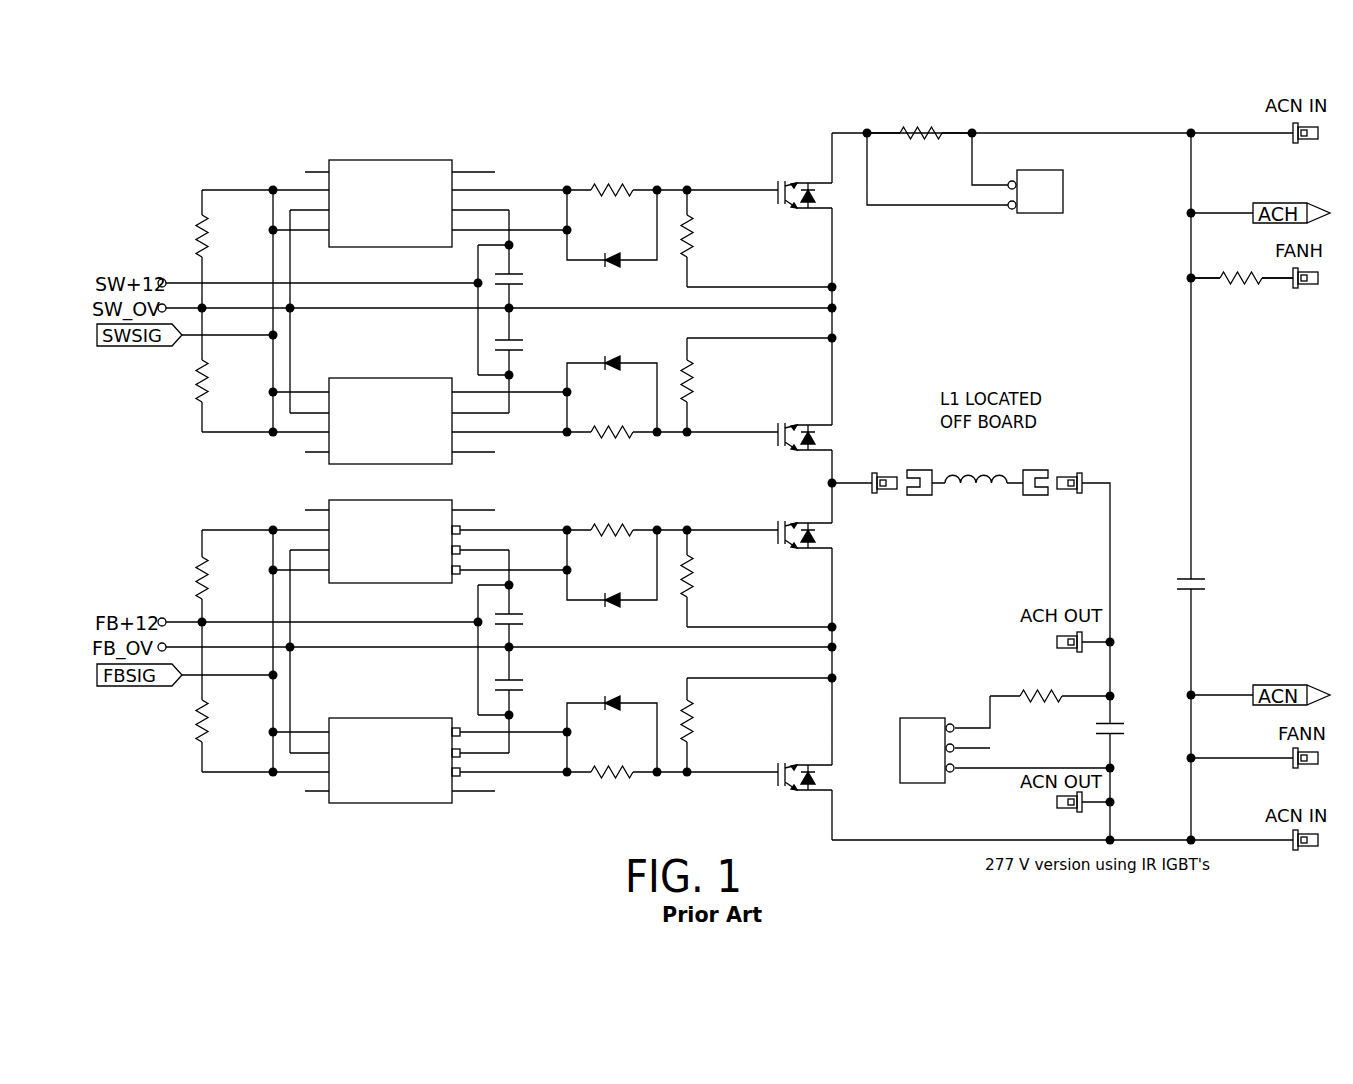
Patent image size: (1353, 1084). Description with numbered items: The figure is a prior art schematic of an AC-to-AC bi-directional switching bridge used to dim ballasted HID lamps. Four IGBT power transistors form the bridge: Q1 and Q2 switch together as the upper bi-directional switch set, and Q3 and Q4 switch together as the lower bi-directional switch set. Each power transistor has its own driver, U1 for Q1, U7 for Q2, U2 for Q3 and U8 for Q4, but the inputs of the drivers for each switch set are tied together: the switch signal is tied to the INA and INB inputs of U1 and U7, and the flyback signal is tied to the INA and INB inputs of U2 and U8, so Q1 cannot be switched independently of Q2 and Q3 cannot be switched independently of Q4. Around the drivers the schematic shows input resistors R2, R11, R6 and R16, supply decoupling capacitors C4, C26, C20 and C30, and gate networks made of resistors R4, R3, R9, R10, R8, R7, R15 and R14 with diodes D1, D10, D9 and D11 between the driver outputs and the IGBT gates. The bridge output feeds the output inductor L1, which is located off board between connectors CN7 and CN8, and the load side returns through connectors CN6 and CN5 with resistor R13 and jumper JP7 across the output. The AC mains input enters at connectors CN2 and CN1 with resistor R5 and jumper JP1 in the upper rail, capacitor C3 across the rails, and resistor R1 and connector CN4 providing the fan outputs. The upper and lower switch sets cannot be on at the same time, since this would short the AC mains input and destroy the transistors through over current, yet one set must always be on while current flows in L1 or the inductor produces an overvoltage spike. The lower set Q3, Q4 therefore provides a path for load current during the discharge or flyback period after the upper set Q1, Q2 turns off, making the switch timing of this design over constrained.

The resistor 1K R2 is at (219, 249).
The resistor 1K R11 is at (225, 370).
The resistor 1K R6 is at (219, 576).
The resistor 1K R16 is at (225, 697).
The driver U1 is at (400, 192).
The driver U7 is at (400, 409).
The driver U2 is at (400, 542).
The driver U8 is at (400, 761).
The capacitor .1uF C4 is at (529, 278).
The capacitor .1uF C26 is at (529, 342).
The capacitor .1uF C20 is at (531, 618).
The capacitor .1uF C30 is at (529, 682).
The gate resistor 10 R4 is at (612, 190).
The diode UF1001 D1 is at (612, 245).
The resistor 1K R3 is at (703, 238).
The diode UF1001 D10 is at (612, 376).
The resistor 1K R10 is at (709, 385).
The gate resistor 10 R9 is at (612, 433).
The gate resistor 10 R8 is at (612, 530).
The diode UF1001 D9 is at (612, 585).
The resistor 1K R7 is at (703, 578).
The diode UF1001 D11 is at (612, 716).
The resistor 1K R14 is at (709, 725).
The gate resistor 10 R15 is at (612, 773).
The power transistor Q1 is at (757, 171).
The power transistor Q2 is at (757, 435).
The power transistor Q3 is at (757, 536).
The power transistor Q4 is at (757, 778).
The sense resistor .010 5W R5 is at (919, 144).
The jumper header JP1 is at (1035, 181).
The ACN IN connector CN2 is at (1302, 147).
The resistor 1K 5W R1 is at (1242, 288).
The capacitor 5uF 600V C3 is at (1228, 613).
The FANN connector CN4 is at (1309, 771).
The ACN IN connector CN1 is at (1309, 853).
The inductor connector CN7 is at (882, 496).
The output inductor L1 is at (977, 480).
The inductor connector CN8 is at (1074, 496).
The ACH OUT connector CN6 is at (1076, 654).
The resistor 36K 2W R13 is at (1041, 708).
The jumper header JP7 is at (927, 739).
The ACN OUT connector CN5 is at (1076, 815).